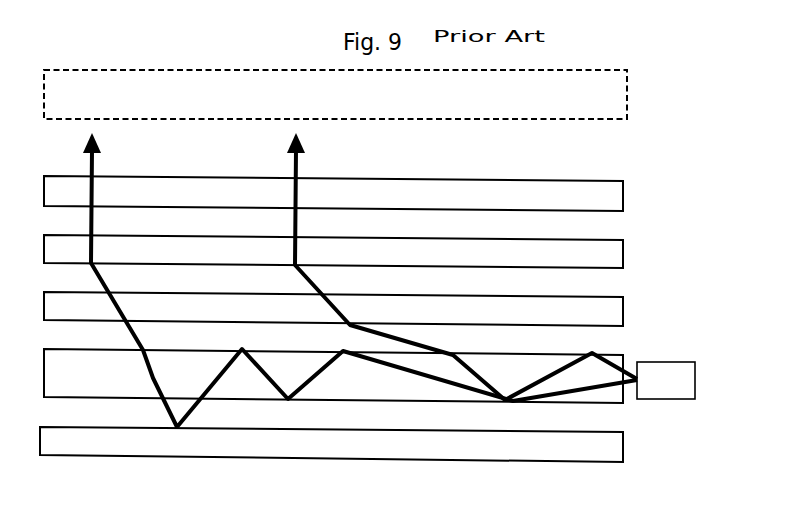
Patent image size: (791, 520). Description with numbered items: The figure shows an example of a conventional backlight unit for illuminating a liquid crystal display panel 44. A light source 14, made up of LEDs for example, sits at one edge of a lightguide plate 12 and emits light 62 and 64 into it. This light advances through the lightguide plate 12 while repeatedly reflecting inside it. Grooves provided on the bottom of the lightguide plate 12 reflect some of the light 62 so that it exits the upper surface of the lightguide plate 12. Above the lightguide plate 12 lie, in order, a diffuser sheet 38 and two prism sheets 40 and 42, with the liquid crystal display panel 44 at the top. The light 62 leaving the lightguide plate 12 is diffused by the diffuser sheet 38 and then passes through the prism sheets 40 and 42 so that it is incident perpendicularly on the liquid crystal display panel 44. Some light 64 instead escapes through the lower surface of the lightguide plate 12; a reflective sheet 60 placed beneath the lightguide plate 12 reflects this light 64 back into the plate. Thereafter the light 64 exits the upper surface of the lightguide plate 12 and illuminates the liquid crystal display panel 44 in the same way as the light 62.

The lightguide plate 12 is at (553, 363).
The light source 14 is at (670, 375).
The diffuser sheet 38 is at (612, 313).
The prism sheet 40 is at (608, 249).
The prism sheet 42 is at (600, 192).
The liquid crystal display panel 44 is at (597, 99).
The reflective sheet 60 is at (608, 451).
The light 62 is at (575, 365).
The light 64 is at (408, 373).